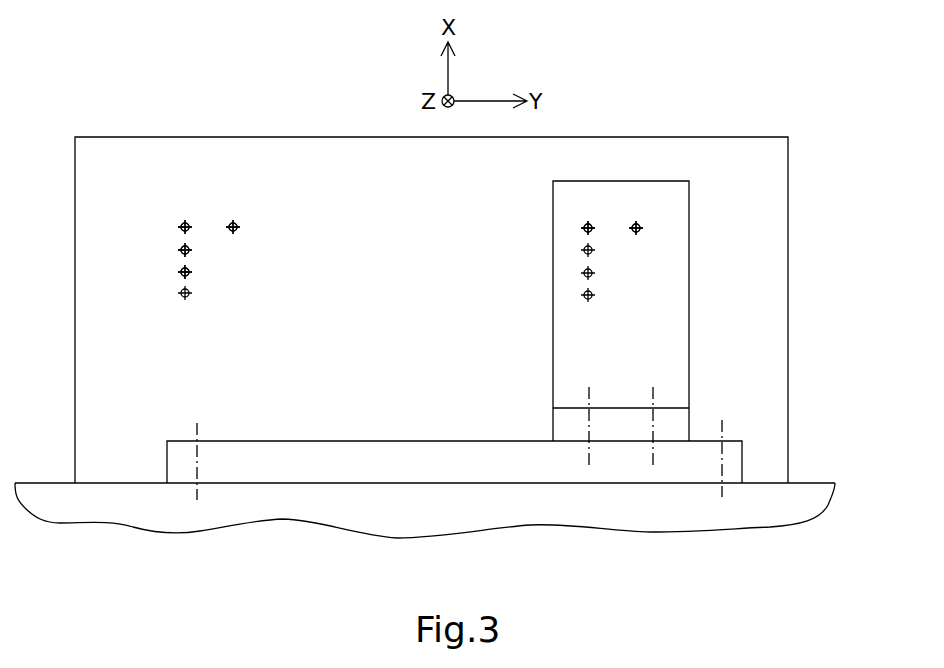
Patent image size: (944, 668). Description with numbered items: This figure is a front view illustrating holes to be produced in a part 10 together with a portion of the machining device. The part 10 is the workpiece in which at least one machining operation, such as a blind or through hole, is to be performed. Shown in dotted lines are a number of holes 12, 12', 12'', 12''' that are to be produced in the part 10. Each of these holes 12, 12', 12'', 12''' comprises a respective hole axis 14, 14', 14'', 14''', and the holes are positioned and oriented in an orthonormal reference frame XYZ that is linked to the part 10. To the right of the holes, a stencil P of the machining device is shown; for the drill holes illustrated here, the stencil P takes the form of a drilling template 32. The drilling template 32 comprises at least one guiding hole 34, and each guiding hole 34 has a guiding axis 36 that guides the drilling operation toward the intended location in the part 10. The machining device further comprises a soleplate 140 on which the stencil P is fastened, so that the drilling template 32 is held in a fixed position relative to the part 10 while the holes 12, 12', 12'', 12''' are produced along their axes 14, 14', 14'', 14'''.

The part 10 is at (212, 137).
The hole 12 is at (249, 197).
The hole axis 14 is at (270, 217).
The hole 12' is at (201, 208).
The hole axis 14' is at (167, 205).
The hole 12'' is at (214, 258).
The hole axis 14'' is at (157, 241).
The hole 12''' is at (228, 285).
The hole axis 14''' is at (157, 279).
The drilling template 32 is at (689, 243).
The guiding hole 34 is at (634, 226).
The guiding axis 36 is at (586, 226).
The soleplate 140 is at (745, 467).
The stencil P is at (664, 181).